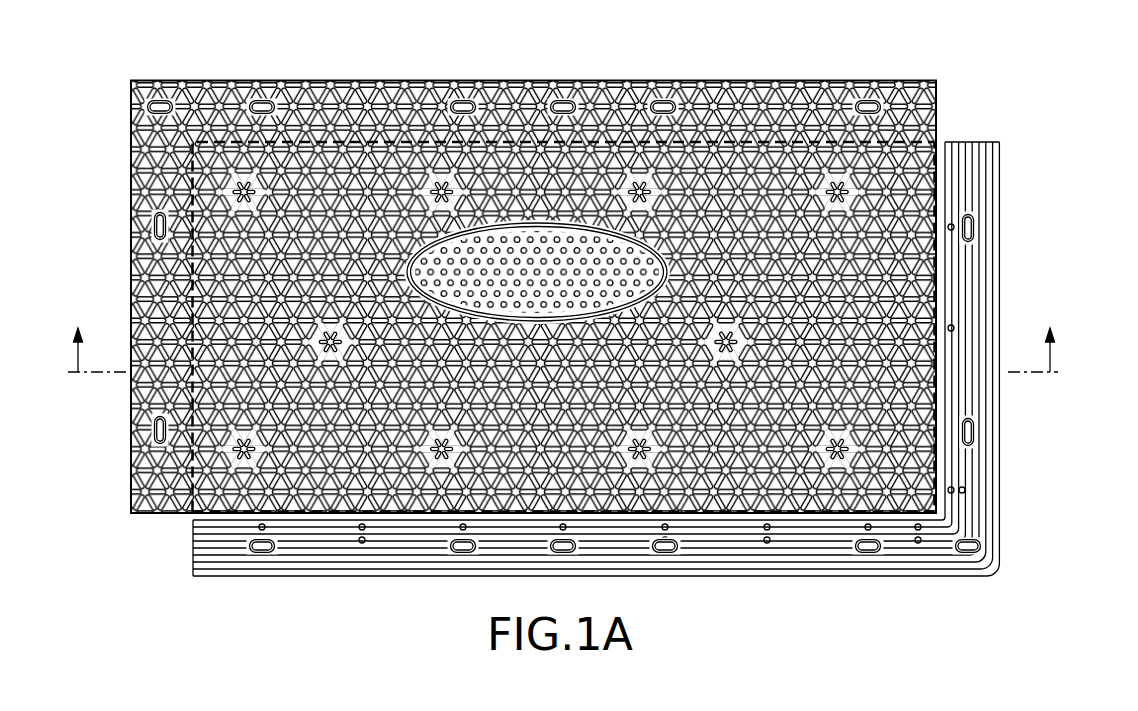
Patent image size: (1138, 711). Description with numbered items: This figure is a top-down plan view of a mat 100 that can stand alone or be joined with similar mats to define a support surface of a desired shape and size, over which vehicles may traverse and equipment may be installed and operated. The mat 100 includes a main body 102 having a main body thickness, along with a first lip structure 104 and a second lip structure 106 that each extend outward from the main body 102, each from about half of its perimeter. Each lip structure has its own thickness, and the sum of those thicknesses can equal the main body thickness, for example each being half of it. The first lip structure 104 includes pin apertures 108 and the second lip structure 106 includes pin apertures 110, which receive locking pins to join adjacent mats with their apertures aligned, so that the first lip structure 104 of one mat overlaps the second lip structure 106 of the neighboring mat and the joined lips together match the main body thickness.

The mat 100 is at (602, 328).
The main body 102 is at (556, 278).
The first lip structure 104 is at (628, 110).
The second lip structure 106 is at (634, 378).
The pin apertures 108 is at (262, 101).
The pin apertures 110 is at (672, 553).